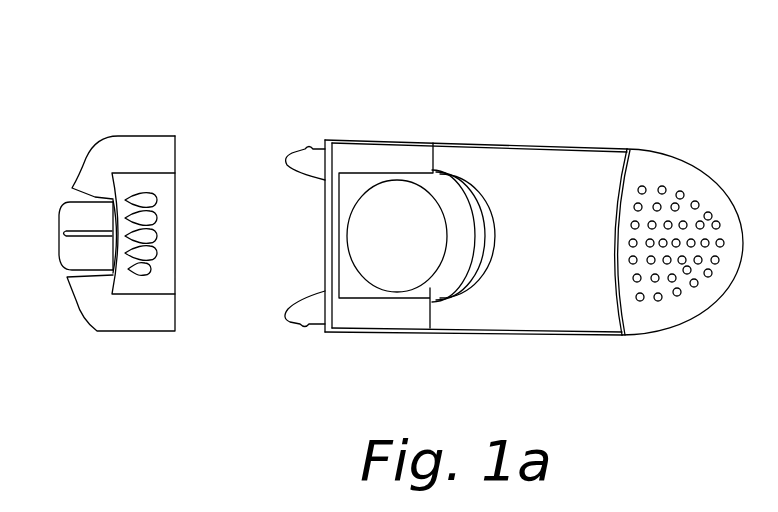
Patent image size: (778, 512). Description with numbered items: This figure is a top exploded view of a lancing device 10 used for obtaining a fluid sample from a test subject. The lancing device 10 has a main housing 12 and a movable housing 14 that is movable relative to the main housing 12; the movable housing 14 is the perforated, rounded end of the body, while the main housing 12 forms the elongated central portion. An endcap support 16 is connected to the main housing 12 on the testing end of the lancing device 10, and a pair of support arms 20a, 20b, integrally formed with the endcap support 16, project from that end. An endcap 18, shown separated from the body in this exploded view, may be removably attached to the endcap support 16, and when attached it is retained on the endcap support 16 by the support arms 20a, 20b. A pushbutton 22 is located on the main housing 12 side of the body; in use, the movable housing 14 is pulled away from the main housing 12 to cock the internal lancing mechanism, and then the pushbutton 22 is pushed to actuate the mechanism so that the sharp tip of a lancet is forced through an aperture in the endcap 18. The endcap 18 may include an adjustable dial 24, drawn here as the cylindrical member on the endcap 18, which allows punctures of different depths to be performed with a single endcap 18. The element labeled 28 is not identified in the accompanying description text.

The lancing device 10 is at (133, 55).
The main housing 12 is at (568, 158).
The movable housing 14 is at (682, 168).
The endcap support 16 is at (330, 139).
The endcap 18 is at (92, 132).
The support arm 20a is at (293, 316).
The support arm 20b is at (297, 150).
The pushbutton 22 is at (415, 205).
The adjustable dial 24 is at (68, 258).
The panel with apertures 28 is at (168, 282).